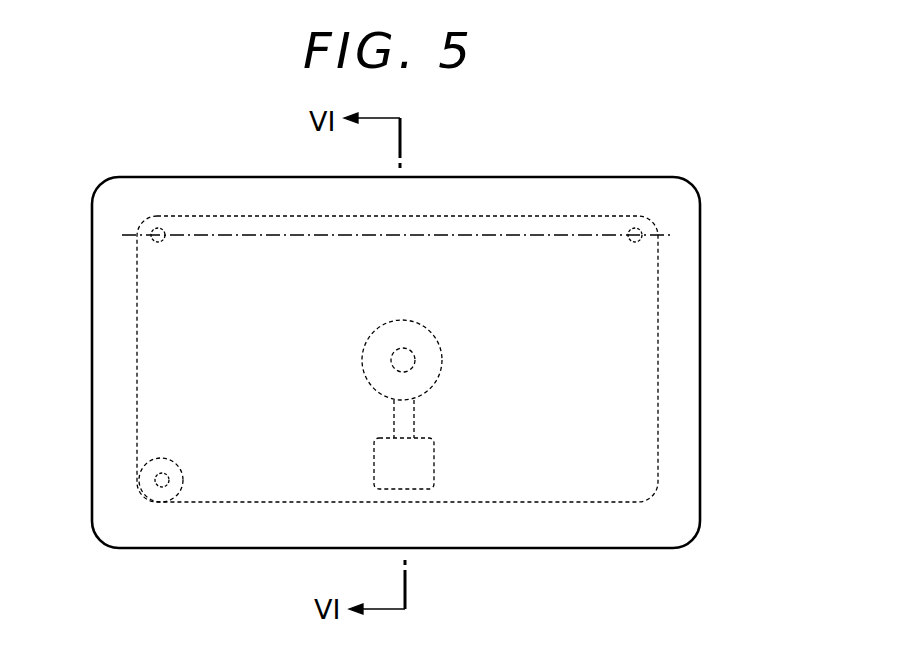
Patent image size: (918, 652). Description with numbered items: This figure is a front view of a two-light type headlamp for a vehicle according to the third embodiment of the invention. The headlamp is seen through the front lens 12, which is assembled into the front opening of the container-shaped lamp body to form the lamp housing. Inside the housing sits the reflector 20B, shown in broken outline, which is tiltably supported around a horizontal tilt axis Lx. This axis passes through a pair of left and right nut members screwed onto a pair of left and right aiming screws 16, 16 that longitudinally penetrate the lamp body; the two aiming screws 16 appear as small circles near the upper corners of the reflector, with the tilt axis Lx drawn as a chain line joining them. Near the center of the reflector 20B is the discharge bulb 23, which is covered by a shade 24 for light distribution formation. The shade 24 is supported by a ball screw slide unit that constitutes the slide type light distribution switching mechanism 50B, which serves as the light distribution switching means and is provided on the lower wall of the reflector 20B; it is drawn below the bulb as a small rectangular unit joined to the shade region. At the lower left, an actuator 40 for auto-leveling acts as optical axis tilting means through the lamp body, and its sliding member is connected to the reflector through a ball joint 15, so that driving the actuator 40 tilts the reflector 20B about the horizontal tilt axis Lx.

The front lens 12 is at (685, 443).
The reflector 20B is at (660, 345).
The horizontal tilt axis Lx is at (540, 225).
The aiming screw 16 is at (159, 228).
The slide type light distribution switching mechanism 50B is at (435, 463).
The shade 24 is at (372, 330).
The discharge bulb 23 is at (409, 351).
The actuator 40 is at (135, 453).
The ball joint 15 is at (137, 488).